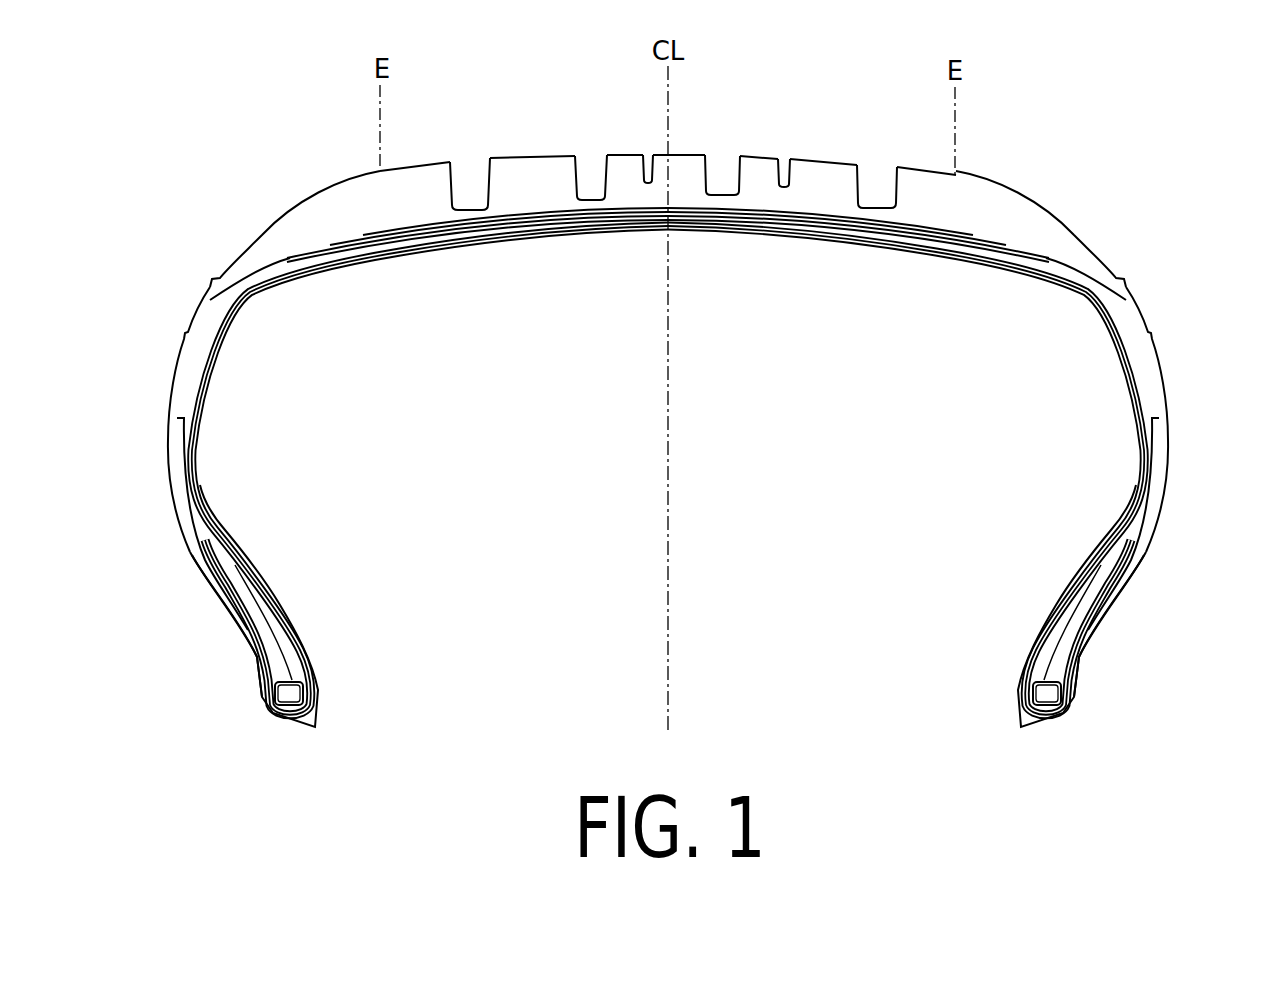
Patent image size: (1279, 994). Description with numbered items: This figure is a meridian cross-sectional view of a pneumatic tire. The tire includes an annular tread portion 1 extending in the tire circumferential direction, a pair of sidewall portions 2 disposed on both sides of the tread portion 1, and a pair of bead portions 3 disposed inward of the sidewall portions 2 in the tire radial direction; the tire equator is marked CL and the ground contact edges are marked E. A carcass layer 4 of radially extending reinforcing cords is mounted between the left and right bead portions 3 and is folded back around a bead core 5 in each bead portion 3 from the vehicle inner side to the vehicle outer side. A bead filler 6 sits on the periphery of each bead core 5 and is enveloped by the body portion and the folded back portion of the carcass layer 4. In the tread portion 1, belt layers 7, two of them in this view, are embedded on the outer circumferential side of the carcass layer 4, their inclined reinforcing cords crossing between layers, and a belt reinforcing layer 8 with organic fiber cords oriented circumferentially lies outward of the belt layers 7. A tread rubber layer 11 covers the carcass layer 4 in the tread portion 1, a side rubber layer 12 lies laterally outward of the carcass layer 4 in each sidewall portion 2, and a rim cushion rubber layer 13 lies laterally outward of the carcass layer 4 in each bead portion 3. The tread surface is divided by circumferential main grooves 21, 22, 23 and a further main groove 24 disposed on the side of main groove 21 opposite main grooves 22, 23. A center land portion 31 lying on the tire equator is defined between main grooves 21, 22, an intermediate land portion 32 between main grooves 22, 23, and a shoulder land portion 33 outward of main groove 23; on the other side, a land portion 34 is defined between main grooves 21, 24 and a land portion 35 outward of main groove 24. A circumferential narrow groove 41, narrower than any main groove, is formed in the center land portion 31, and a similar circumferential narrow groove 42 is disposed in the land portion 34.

The tread portion 1 is at (746, 106).
The sidewall portions 2 is at (158, 447).
The bead portions 3 is at (247, 697).
The carcass layer 4 is at (1122, 340).
The bead core 5 is at (297, 692).
The bead filler 6 is at (276, 637).
The belt layers 7 is at (805, 224).
The belt reinforcing layer 8 is at (922, 238).
The tread rubber layer 11 is at (964, 169).
The side rubber layer 12 is at (177, 417).
The rim cushion rubber layer 13 is at (250, 634).
The main groove 21 is at (722, 192).
The main groove 22 is at (590, 197).
The main groove 23 is at (470, 206).
The main groove 24 is at (877, 205).
The center land portion 31 is at (683, 154).
The intermediate land portion 32 is at (533, 156).
The shoulder land portion 33 is at (408, 167).
The land portion 34 is at (820, 160).
The land portion 35 is at (930, 172).
The circumferential narrow groove 41 is at (648, 180).
The circumferential narrow groove 42 is at (784, 185).